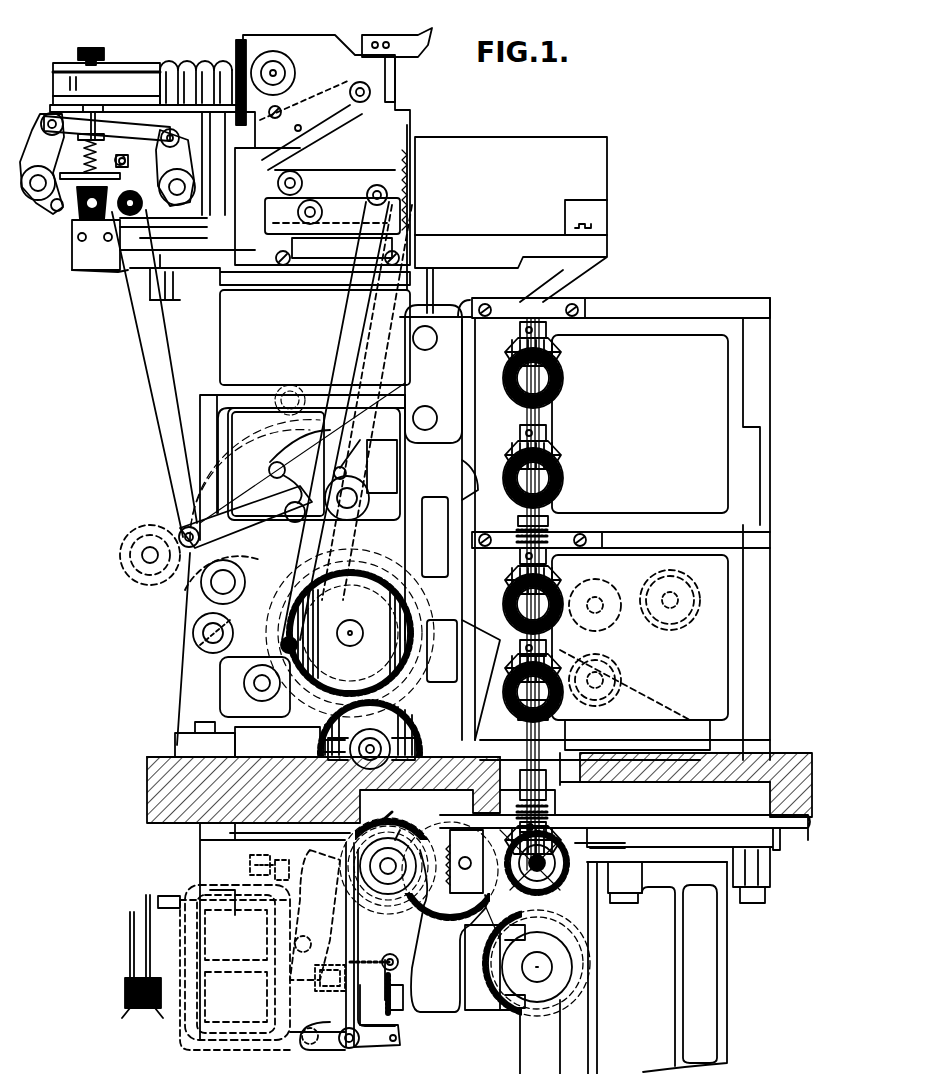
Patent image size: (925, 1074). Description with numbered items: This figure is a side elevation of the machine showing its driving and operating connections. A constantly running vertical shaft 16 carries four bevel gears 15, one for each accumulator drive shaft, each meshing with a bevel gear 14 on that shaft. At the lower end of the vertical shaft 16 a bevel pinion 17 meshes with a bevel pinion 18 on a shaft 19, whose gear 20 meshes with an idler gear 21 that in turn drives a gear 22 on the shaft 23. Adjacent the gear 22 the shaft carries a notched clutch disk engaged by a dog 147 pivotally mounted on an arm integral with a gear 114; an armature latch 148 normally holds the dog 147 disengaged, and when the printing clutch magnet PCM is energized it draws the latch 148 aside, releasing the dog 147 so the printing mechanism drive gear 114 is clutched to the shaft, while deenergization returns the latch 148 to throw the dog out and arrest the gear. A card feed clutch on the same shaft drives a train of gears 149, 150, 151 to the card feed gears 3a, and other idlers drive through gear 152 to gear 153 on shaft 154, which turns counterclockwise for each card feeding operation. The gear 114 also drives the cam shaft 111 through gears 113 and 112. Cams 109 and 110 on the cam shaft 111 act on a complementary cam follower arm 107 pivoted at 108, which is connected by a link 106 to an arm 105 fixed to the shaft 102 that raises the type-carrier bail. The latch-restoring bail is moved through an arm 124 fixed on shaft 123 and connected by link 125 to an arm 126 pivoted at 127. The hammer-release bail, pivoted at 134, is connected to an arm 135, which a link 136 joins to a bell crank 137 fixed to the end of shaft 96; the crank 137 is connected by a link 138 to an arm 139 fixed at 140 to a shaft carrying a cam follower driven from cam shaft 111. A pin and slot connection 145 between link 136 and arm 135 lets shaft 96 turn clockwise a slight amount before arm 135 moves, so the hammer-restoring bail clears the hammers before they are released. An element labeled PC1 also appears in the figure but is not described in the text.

The pin and slot connection 145 is at (52, 118).
The arm 135 is at (42, 150).
The link 136 is at (124, 134).
The bell crank 137 is at (181, 147).
The pivot 134 is at (38, 190).
The shaft 96 is at (181, 193).
The shaft 123 is at (312, 210).
The arm 124 is at (330, 226).
The link 138 is at (158, 345).
The link 125 is at (335, 348).
The arm 105 is at (380, 354).
The shaft 102 is at (430, 345).
The bevel gear 15 is at (556, 346).
The bevel gear 14 is at (563, 376).
The vertical shaft 16 is at (540, 414).
The link 106 is at (292, 432).
The arm 126 is at (351, 450).
The pivot 127 is at (352, 490).
The fixing point 140 is at (292, 502).
The arm 139 is at (235, 525).
The card feed gears 3a is at (158, 524).
The gear 151 is at (180, 600).
The pivot 108 is at (217, 586).
The complementary cam follower arm 107 is at (186, 643).
The cam 109 is at (365, 560).
The cam 110 is at (372, 580).
The cam shaft 111 is at (350, 624).
The gear 112 is at (405, 583).
The gear 150 is at (292, 706).
The gear 149 is at (330, 745).
The gear 113 is at (420, 726).
The printing mechanism drive gear 114 is at (410, 815).
The dog 147 is at (320, 834).
The armature latch 148 is at (318, 920).
The shaft 23 is at (388, 875).
The gear 22 is at (455, 900).
The idler gear 21 is at (466, 861).
The shaft 19 is at (533, 959).
The gear 20 is at (585, 866).
The bevel pinion 17 is at (550, 842).
The bevel pinion 18 is at (592, 850).
The gear 152 is at (588, 912).
The gear 153 is at (590, 933).
The shaft 154 is at (545, 966).
The program control PC1 is at (152, 905).
The printing clutch magnet PCM is at (244, 1026).